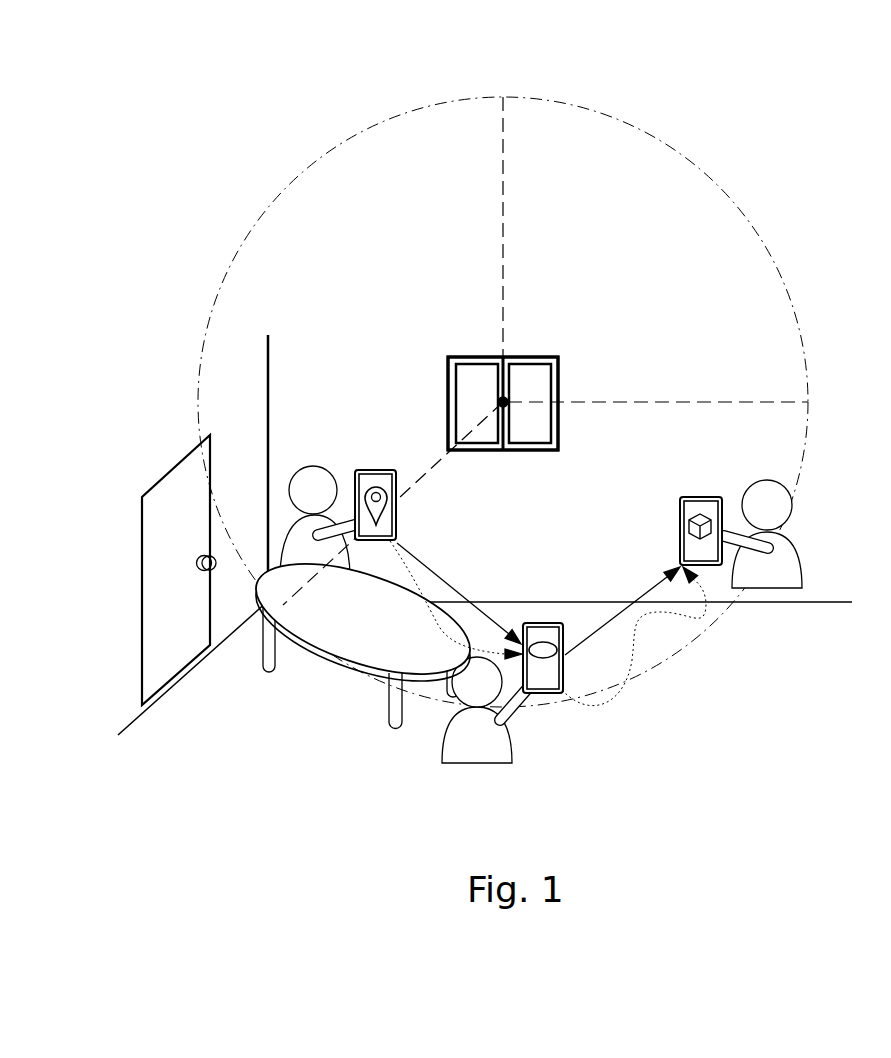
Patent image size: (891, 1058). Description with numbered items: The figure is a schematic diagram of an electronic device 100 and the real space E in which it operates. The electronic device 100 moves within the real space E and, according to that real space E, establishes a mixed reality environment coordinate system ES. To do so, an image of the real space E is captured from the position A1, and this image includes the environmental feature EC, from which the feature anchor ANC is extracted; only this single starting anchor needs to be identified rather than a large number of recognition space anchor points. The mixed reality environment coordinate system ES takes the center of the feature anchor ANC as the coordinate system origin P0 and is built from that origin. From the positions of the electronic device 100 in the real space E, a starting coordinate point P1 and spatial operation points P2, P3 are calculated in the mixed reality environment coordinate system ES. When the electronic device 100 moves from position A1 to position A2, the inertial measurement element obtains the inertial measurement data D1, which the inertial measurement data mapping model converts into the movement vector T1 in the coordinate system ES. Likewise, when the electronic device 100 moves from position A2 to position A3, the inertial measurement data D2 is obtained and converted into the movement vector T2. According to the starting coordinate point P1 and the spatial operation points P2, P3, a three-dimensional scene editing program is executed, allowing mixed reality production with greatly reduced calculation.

The real space E is at (885, 58).
The mixed reality environment coordinate system ES is at (726, 190).
The environmental feature EC is at (534, 357).
The feature anchor ANC is at (559, 357).
The coordinate system origin P0 is at (508, 402).
The starting coordinate point P1 is at (335, 494).
The position A1 is at (374, 490).
The electronic device 100 is at (398, 517).
The movement vector T1 is at (455, 590).
The spatial operation point P2 is at (499, 664).
The position A2 is at (542, 643).
The inertial measurement data D1 is at (437, 623).
The movement vector T2 is at (652, 588).
The spatial operation point P3 is at (744, 519).
The position A3 is at (700, 520).
The inertial measurement data D2 is at (655, 612).